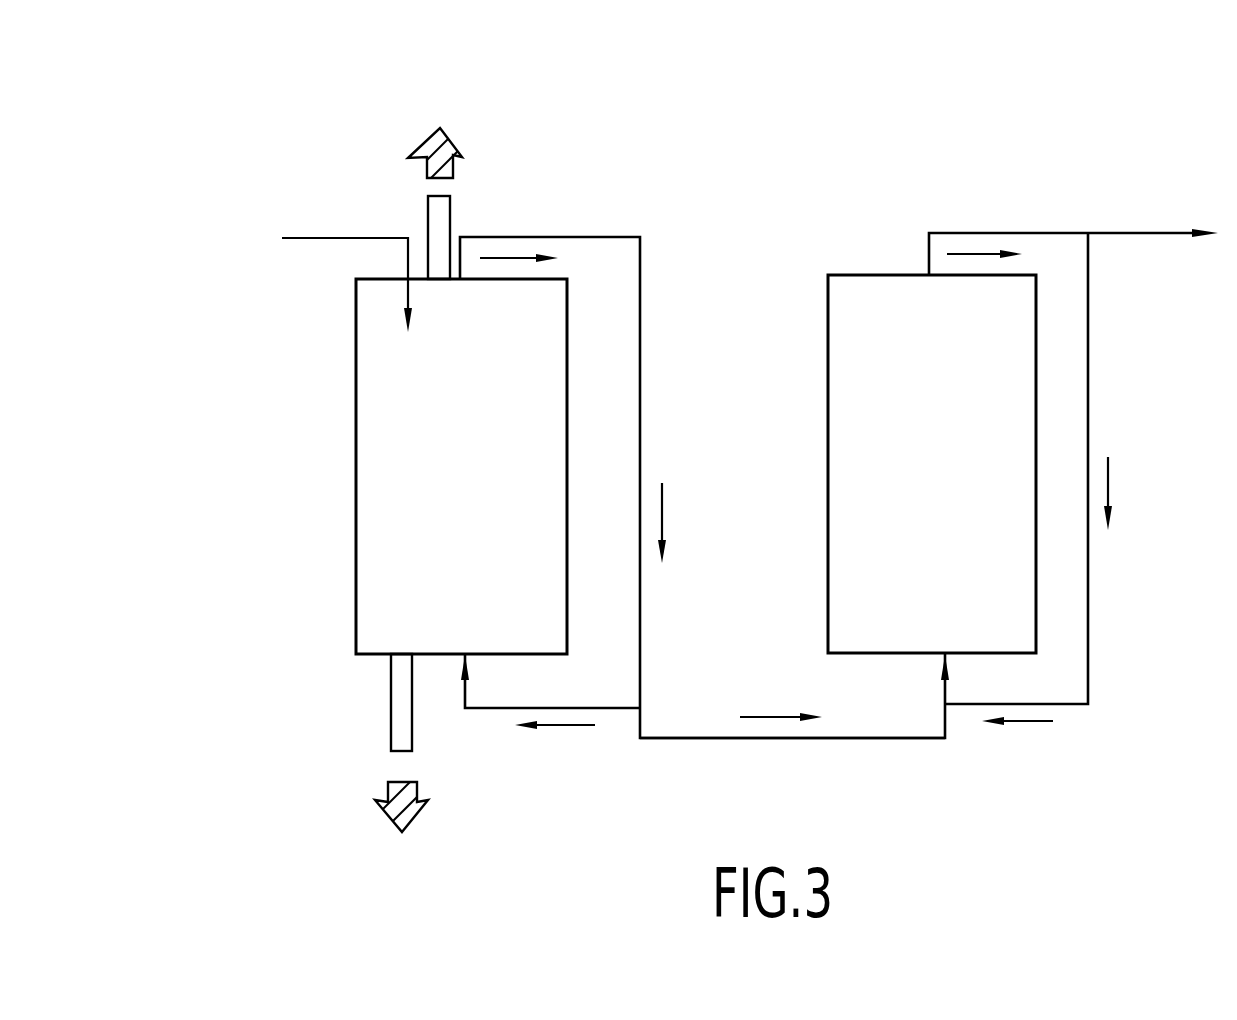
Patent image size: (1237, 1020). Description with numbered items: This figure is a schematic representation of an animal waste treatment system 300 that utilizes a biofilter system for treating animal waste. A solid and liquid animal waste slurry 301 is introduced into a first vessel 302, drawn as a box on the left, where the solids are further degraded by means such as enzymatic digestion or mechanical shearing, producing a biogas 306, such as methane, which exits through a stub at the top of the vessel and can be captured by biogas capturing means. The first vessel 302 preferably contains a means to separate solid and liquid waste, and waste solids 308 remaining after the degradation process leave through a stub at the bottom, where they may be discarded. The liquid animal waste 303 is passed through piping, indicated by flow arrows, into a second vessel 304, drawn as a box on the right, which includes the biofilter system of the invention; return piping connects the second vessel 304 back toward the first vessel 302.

The animal waste treatment system 300 is at (915, 163).
The solid and liquid animal waste slurry 301 is at (316, 275).
The first vessel 302 is at (370, 486).
The liquid animal waste 303 is at (792, 702).
The second vessel 304 is at (862, 480).
The biogas 306 is at (467, 199).
The waste solids 308 is at (433, 745).